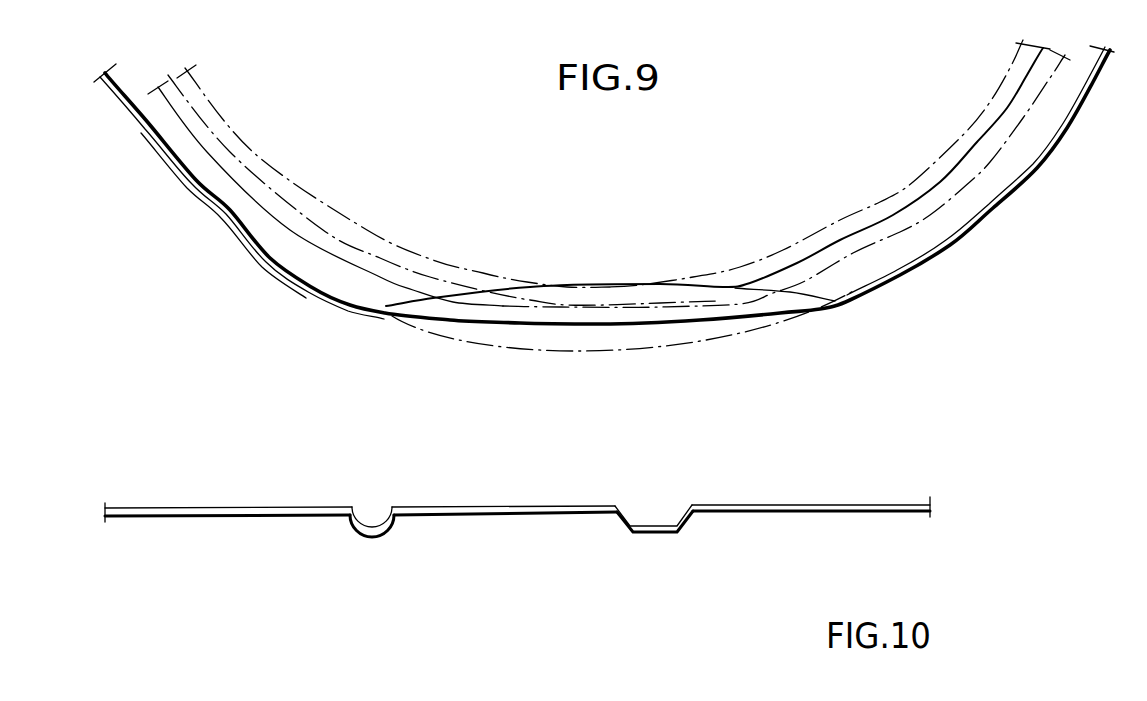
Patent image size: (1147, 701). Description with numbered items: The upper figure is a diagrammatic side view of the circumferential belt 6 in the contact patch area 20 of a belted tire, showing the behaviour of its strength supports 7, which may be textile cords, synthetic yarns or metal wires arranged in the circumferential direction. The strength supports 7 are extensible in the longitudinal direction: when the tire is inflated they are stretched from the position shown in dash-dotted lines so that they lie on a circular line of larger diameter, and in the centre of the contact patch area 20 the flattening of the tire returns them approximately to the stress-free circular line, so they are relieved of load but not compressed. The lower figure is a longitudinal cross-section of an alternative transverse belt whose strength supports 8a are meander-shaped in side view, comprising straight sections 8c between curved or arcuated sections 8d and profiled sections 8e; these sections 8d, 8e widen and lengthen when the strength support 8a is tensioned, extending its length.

In FIG. 9, the circumferential belt 6 is at (357, 322).
In FIG. 9, the strength supports 7 is at (268, 160).
In FIG. 9, the contact patch area 20 is at (616, 326).
In FIG. 10, the strength supports of the transverse belt 8a is at (517, 515).
In FIG. 10, the straight sections 8c is at (226, 517).
In FIG. 10, the curved sections 8d is at (382, 534).
In FIG. 10, the profiled sections 8e is at (655, 533).